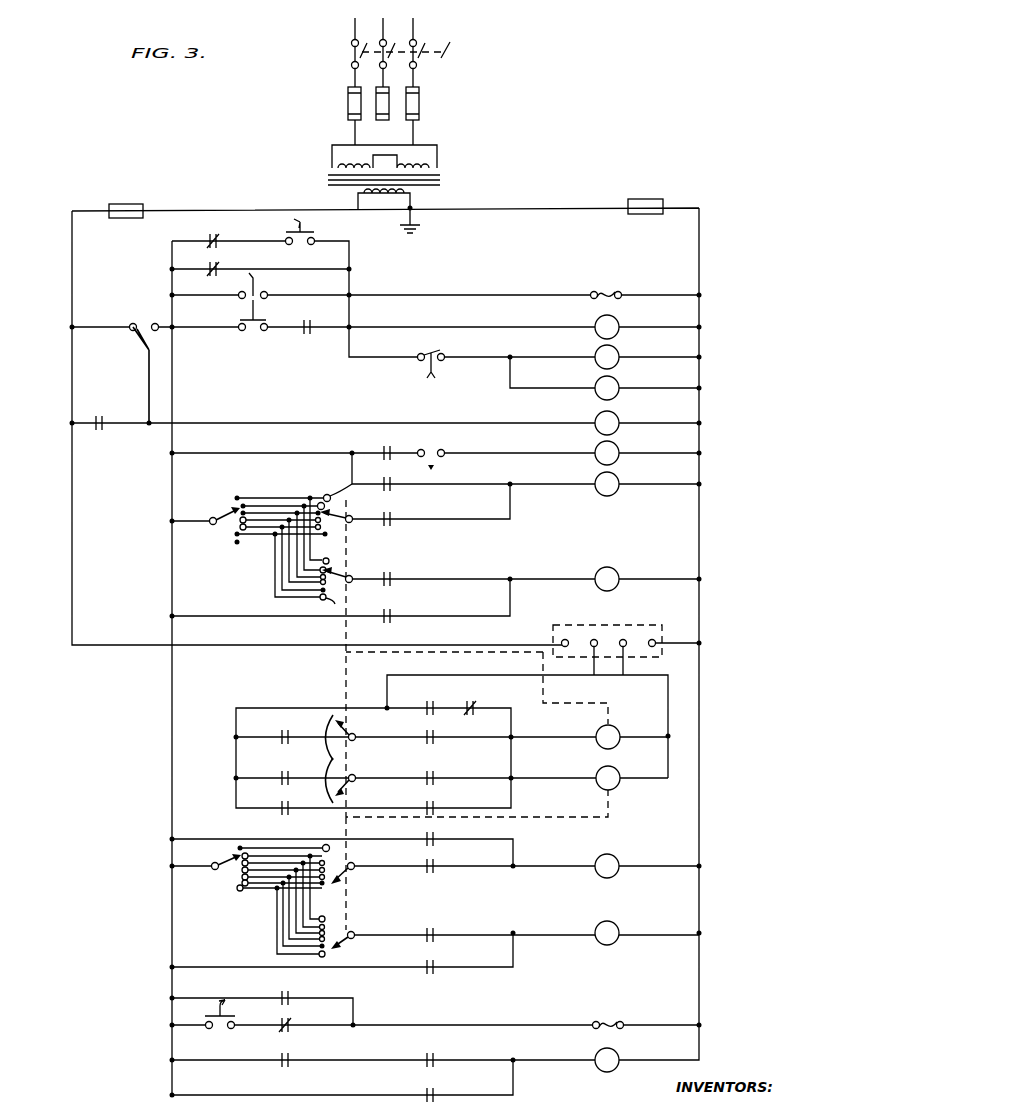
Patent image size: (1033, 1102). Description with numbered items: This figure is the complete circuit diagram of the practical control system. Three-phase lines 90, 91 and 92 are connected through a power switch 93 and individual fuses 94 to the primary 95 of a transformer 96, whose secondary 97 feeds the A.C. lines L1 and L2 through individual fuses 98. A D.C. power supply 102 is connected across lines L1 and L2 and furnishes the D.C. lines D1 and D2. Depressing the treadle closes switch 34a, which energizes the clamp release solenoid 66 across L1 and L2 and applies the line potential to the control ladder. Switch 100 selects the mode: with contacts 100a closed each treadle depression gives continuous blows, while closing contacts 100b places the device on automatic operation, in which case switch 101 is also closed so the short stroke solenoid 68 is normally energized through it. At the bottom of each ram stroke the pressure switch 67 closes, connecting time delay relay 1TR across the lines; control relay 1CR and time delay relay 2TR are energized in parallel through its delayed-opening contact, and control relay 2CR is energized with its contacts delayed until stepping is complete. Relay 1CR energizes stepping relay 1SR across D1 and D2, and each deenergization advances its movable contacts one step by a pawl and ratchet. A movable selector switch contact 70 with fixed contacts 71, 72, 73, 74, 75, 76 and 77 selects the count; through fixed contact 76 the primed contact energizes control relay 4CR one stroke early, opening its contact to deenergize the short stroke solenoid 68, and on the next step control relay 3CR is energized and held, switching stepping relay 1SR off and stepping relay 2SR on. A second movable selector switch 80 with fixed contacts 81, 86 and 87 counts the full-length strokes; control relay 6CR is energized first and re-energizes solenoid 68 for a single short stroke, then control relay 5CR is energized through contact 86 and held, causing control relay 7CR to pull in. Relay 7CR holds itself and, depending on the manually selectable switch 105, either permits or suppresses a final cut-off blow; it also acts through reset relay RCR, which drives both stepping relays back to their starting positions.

The three-phase line 90 is at (355, 23).
The three-phase line 91 is at (388, 23).
The three-phase line 92 is at (413, 23).
The power switch 93 is at (448, 50).
The fuses 94 is at (348, 102).
The primary 95 is at (437, 152).
The transformer 96 is at (444, 180).
The secondary 97 is at (380, 207).
The fuses 98 is at (126, 204).
The switch 105 is at (305, 228).
The switch 100 is at (256, 318).
The switch contacts 100a is at (264, 292).
The switch contacts 100b is at (264, 331).
The pressure switch 67 is at (310, 325).
The switch 34a is at (133, 324).
The clamp release solenoid 66 is at (610, 286).
The short stroke solenoid 68 is at (612, 1016).
The movable selector switch contact 70 is at (214, 506).
The fixed contact 71 is at (237, 537).
The fixed contact 72 is at (235, 542).
The fixed contact 73 is at (245, 530).
The fixed contact 74 is at (246, 518).
The fixed contact 75 is at (244, 512).
The fixed contact 76 is at (243, 505).
The fixed contact 77 is at (237, 497).
The movable selector switch 80 is at (228, 872).
The fixed contact 81 is at (240, 890).
The fixed contact 86 is at (243, 856).
The fixed contact 87 is at (243, 846).
The switch 101 is at (228, 1012).
The D.C. power supply 102 is at (600, 628).
The power line L1 is at (72, 500).
The power line L2 is at (699, 510).
The D.C. power line D1 is at (452, 678).
The D.C. power line D2 is at (668, 690).
The time delay relay 1TR is at (616, 318).
The time delay relay 2TR is at (616, 379).
The control relay 1CR is at (616, 348).
The control relay 2CR is at (616, 444).
The control relay 3CR is at (616, 475).
The control relay 4CR is at (616, 570).
The control relay 5CR is at (616, 857).
The control relay 6CR is at (617, 924).
The control relay 7CR is at (605, 1072).
The reset relay RCR is at (616, 414).
The stepping relay 1SR is at (616, 728).
The stepping relay 2SR is at (617, 769).